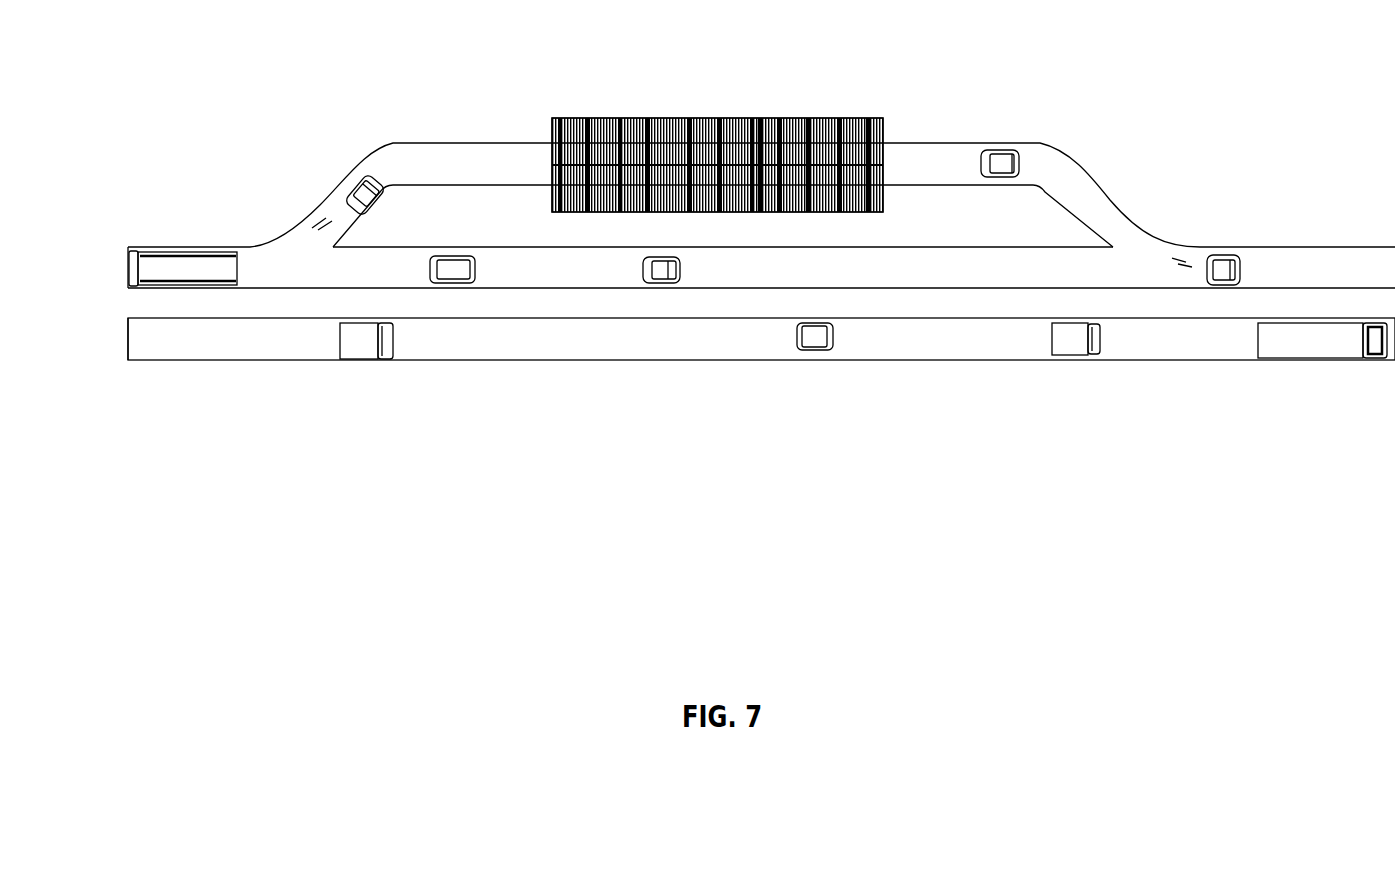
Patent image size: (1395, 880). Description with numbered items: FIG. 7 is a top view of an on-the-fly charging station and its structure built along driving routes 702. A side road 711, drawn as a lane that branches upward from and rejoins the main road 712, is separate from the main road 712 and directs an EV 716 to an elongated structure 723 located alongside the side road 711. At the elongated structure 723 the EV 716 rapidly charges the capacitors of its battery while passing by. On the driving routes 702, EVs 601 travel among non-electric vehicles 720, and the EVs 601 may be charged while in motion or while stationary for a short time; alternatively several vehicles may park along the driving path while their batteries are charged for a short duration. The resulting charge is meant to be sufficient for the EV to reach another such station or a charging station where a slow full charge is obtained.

The EVs 601 is at (370, 185).
The driving routes 702 is at (86, 352).
The side road 711 is at (1048, 177).
The main road 712 is at (1087, 268).
The EV 716 is at (1004, 147).
The non-electric vehicles 720 is at (206, 227).
The elongated structure 723 is at (883, 169).